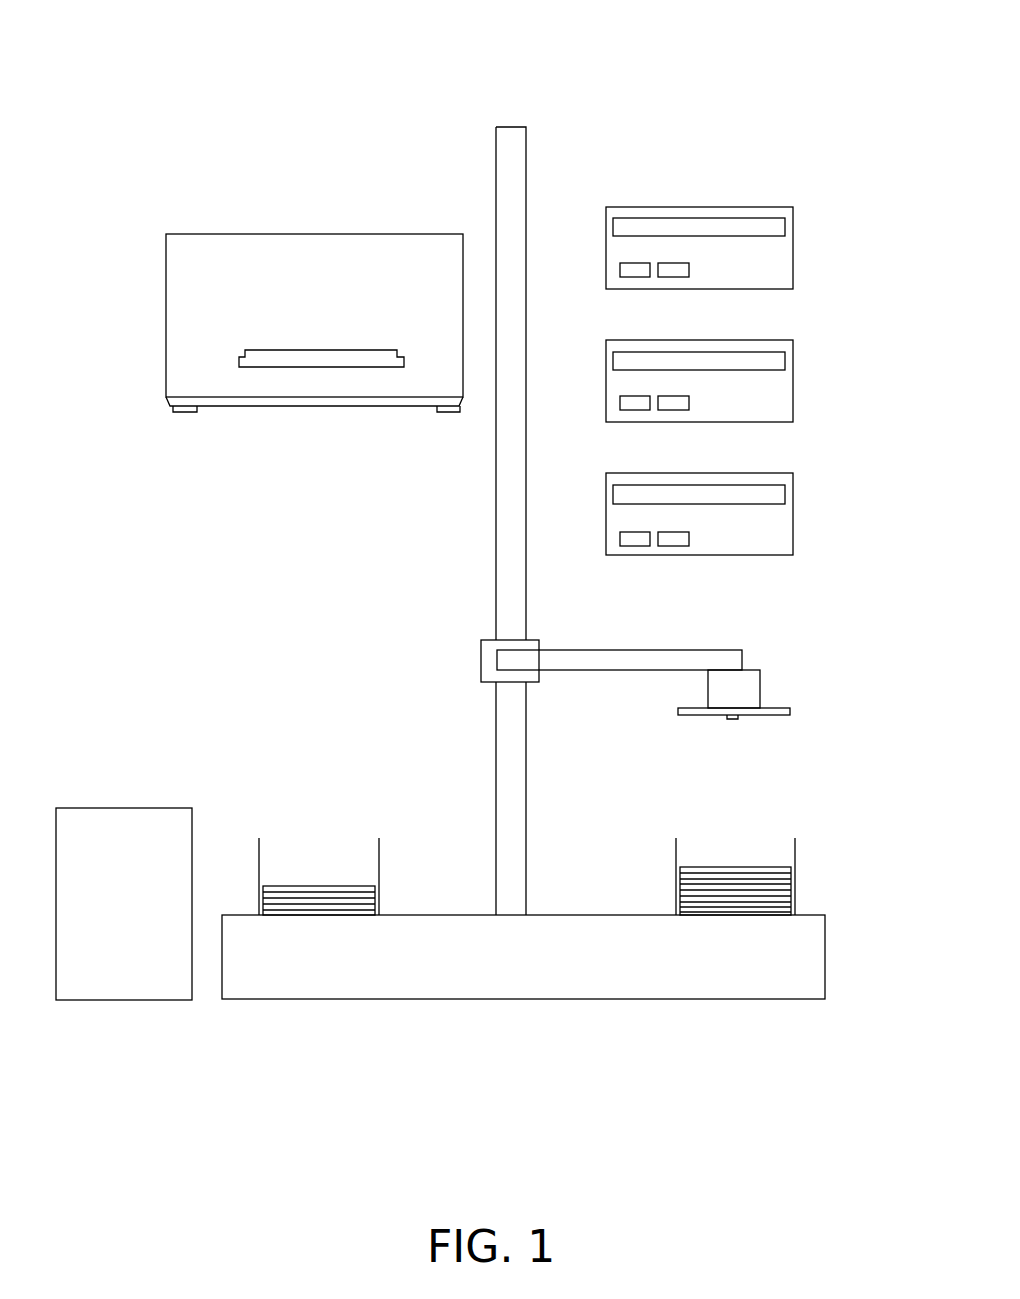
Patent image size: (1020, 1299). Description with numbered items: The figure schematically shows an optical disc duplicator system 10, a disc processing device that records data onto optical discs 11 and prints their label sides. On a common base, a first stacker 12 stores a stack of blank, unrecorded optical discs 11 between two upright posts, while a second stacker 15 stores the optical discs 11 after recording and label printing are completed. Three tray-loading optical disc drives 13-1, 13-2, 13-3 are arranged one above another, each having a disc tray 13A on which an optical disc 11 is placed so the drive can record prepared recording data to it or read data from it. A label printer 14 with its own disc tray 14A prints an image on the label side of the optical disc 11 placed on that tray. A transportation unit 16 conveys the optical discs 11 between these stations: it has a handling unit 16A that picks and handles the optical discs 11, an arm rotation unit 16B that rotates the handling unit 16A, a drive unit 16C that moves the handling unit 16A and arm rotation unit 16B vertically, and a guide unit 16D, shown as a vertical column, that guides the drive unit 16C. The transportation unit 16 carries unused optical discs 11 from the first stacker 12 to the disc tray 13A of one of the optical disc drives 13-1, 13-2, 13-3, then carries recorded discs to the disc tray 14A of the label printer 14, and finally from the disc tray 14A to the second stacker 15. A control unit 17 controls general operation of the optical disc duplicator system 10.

The optical disc duplicator system 10 is at (606, 32).
The optical disc 11 is at (788, 708).
The first stacker 12 is at (795, 860).
The optical disc drive 13-1 is at (767, 207).
The optical disc drive 13-2 is at (767, 340).
The optical disc drive 13-3 is at (767, 473).
The disc tray 13A is at (785, 225).
The label printer 14 is at (328, 234).
The disc tray 14A is at (312, 360).
The second stacker 15 is at (379, 860).
The transportation unit 16 is at (692, 638).
The handling unit 16A is at (762, 687).
The arm rotation unit 16B is at (608, 670).
The drive unit 16C is at (481, 660).
The guide unit 16D is at (496, 542).
The control unit 17 is at (130, 808).